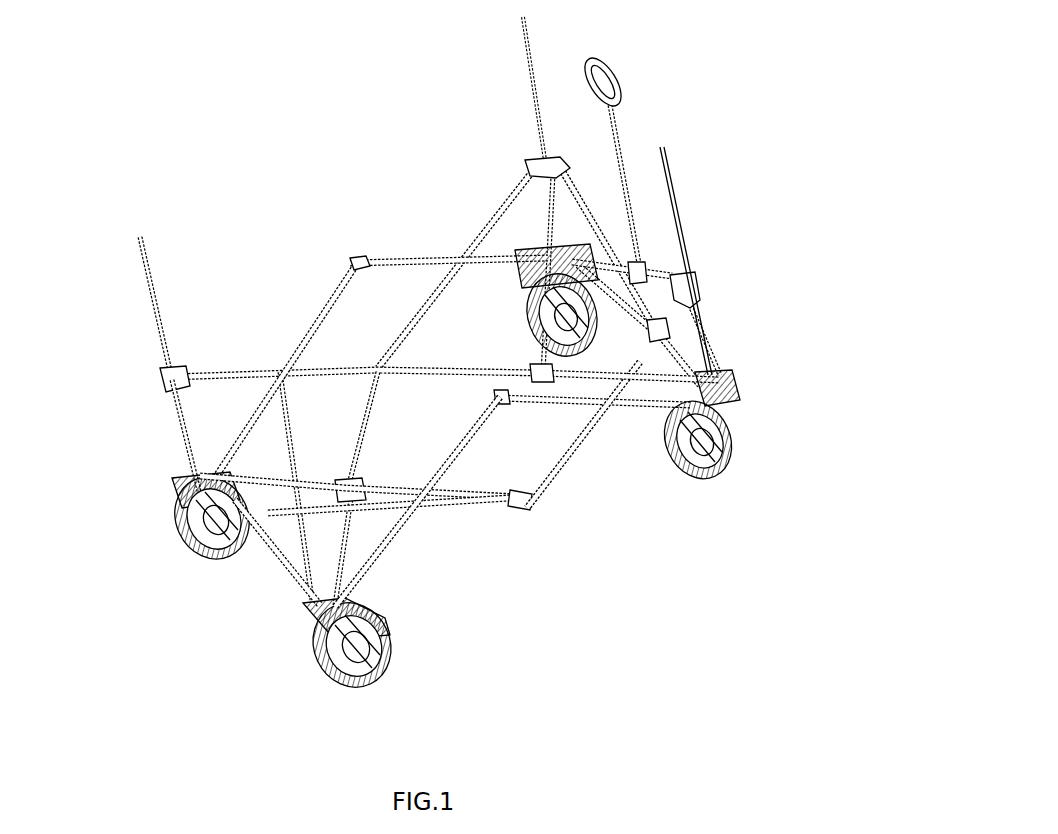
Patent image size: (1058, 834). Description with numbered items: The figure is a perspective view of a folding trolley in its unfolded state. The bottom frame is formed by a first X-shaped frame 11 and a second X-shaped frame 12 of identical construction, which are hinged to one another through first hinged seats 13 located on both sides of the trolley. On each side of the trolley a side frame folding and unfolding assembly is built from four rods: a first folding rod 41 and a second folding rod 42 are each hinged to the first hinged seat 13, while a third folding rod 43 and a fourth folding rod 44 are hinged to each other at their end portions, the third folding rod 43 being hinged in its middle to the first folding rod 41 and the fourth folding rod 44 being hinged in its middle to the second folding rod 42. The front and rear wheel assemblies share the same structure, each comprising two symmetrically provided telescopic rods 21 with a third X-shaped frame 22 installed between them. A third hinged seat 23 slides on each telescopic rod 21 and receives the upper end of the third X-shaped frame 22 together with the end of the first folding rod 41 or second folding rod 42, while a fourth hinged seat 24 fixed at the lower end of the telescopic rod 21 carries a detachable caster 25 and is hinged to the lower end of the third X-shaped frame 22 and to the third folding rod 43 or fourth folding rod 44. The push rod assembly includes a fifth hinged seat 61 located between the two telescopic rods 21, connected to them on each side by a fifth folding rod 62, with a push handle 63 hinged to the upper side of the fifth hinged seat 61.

The first X-shaped frame 11 is at (372, 495).
The second X-shaped frame 12 is at (570, 385).
The first hinged seat 13 is at (528, 511).
The telescopic rod 21 is at (175, 447).
The third X-shaped frame 22 is at (278, 558).
The third hinged seat 23 is at (162, 398).
The fourth hinged seat 24 is at (317, 617).
The caster 25 is at (198, 553).
The first folding rod 41 is at (443, 516).
The second folding rod 42 is at (572, 460).
The third folding rod 43 is at (312, 305).
The fourth folding rod 44 is at (425, 256).
The fifth hinged seat 61 is at (660, 331).
The fifth folding rod 62 is at (620, 280).
The push handle 63 is at (632, 207).